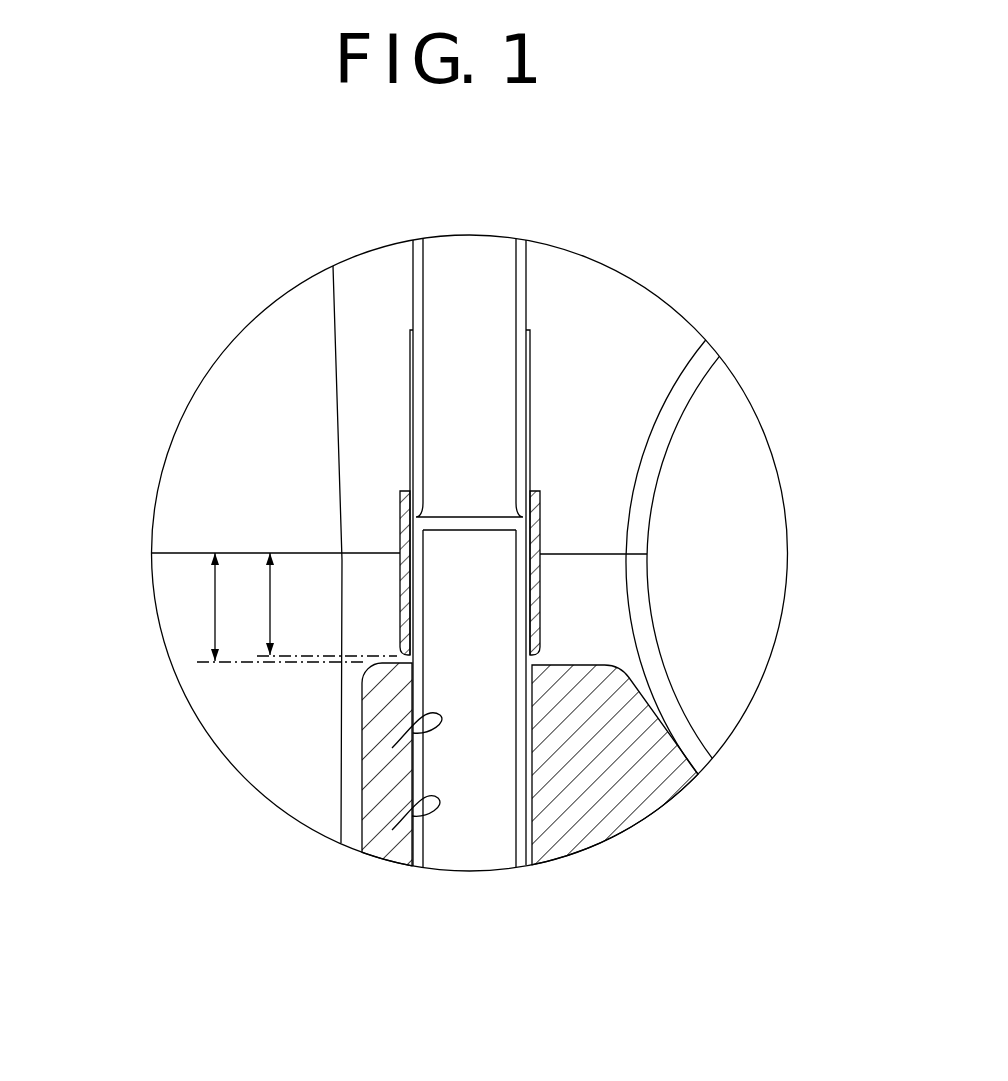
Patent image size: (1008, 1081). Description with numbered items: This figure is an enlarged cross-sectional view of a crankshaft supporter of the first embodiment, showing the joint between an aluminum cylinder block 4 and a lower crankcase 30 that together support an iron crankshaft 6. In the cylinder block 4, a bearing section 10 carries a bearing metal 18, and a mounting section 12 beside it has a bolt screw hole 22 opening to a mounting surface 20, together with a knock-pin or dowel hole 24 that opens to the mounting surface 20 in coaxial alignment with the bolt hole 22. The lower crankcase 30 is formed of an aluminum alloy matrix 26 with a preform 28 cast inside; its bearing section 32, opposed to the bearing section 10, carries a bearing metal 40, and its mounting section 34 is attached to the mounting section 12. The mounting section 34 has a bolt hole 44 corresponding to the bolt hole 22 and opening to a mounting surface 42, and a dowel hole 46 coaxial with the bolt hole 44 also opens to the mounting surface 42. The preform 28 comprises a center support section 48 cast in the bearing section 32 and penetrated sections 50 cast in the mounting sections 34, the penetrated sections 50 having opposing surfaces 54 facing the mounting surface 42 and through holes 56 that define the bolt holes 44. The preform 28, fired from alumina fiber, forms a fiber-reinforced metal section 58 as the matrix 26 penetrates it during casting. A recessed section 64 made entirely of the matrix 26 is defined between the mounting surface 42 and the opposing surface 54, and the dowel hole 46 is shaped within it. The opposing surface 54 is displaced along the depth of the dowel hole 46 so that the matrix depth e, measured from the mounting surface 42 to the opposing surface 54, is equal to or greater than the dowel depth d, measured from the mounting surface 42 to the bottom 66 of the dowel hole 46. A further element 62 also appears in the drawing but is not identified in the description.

The cylinder block 4 is at (628, 277).
The crankshaft 6 is at (742, 468).
The bearing section 10 is at (400, 508).
The mounting sections 12 is at (368, 295).
The bearing metal 18 is at (670, 423).
The mounting surface 20 is at (160, 560).
The bolt screw holes 22 is at (415, 278).
The knock-pin (dowel) hole 24 is at (550, 548).
The matrix 26 is at (580, 584).
The preform 28 is at (570, 783).
The lower crankcase 30 is at (700, 776).
The bearing section 32 is at (678, 737).
The mounting sections 34 is at (343, 813).
The bearing metal 40 is at (668, 673).
The mounting surface 42 is at (183, 550).
The bolt holes 44 is at (362, 850).
The dowel hole 46 is at (548, 635).
The center support section 48 is at (628, 767).
The penetrated sections 50 is at (372, 707).
The opposing surfaces 54 is at (597, 650).
The through holes 56 is at (375, 752).
The fiber-reinforced metal (FRM) section 58 is at (657, 815).
The sleeve 62 is at (490, 262).
The recessed section 64 is at (380, 567).
The bottom 66 is at (407, 643).
The depth of the dowel d is at (267, 597).
The depth of the matrix e is at (210, 618).